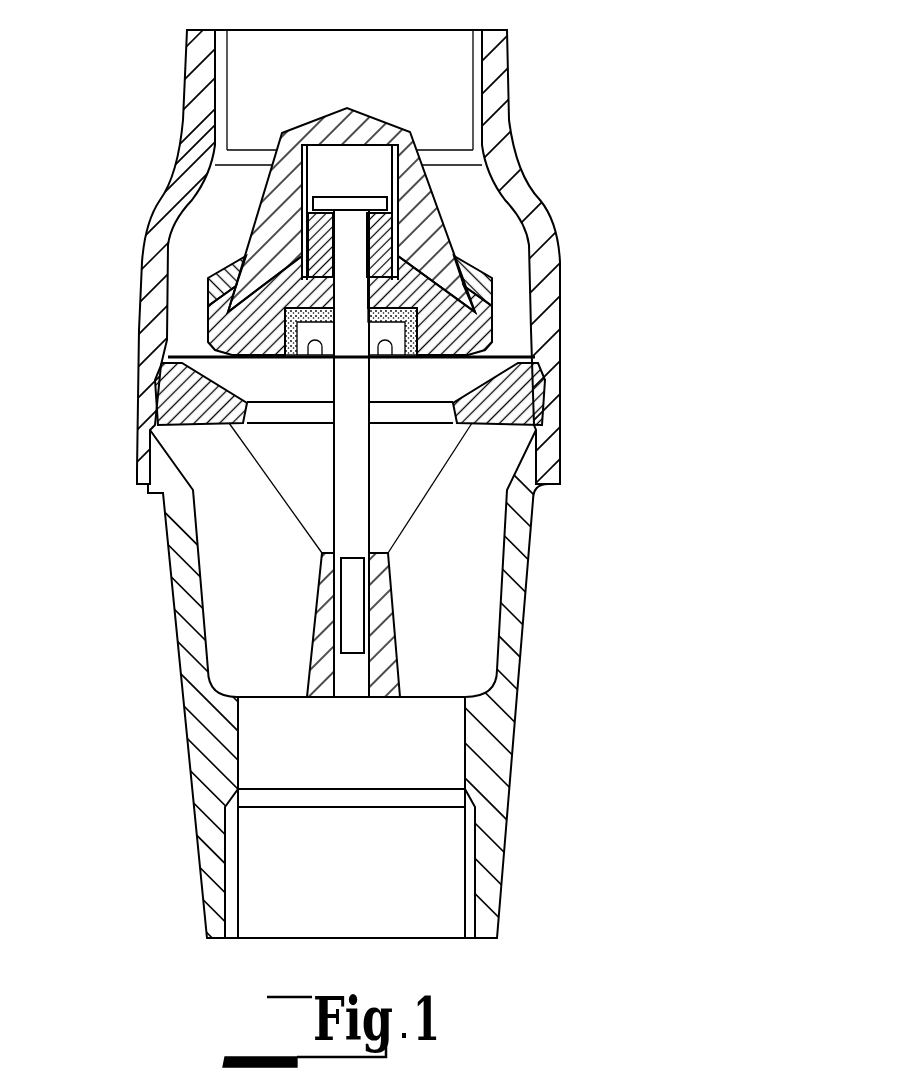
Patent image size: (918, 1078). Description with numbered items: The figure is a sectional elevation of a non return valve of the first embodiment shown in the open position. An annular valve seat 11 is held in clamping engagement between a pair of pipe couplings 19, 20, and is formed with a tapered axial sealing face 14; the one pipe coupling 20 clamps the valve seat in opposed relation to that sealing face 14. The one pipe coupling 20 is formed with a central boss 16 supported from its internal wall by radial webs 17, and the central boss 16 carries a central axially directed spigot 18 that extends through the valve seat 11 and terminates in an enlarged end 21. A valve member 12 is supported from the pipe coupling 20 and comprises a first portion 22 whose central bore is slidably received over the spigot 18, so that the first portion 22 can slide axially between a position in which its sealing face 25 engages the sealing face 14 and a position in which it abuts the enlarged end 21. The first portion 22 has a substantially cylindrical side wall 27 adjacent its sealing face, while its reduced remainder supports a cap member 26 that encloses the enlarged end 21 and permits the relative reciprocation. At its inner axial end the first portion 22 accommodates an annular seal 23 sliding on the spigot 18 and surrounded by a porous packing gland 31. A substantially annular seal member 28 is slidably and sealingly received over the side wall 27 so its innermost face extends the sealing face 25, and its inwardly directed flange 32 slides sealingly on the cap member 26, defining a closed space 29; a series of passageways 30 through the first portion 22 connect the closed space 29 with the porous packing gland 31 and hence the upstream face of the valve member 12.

The valve seat 11 is at (545, 407).
The valve member 12 is at (497, 232).
The sealing face 14 is at (522, 356).
The central boss 16 is at (397, 637).
The radial webs 17 is at (480, 520).
The spigot 18 is at (357, 490).
The pipe coupling 19 is at (512, 152).
The pipe coupling 20 is at (506, 728).
The enlarged end 21 is at (328, 193).
The first portion 22 is at (215, 340).
The annular seal 23 is at (245, 418).
The sealing face 25 is at (176, 387).
The cap member 26 is at (412, 130).
The side wall 27 is at (470, 330).
The seal member 28 is at (482, 302).
The closed space 29 is at (213, 262).
The passageways 30 is at (228, 310).
The porous packing gland 31 is at (548, 383).
The inwardly directed flange 32 is at (475, 268).